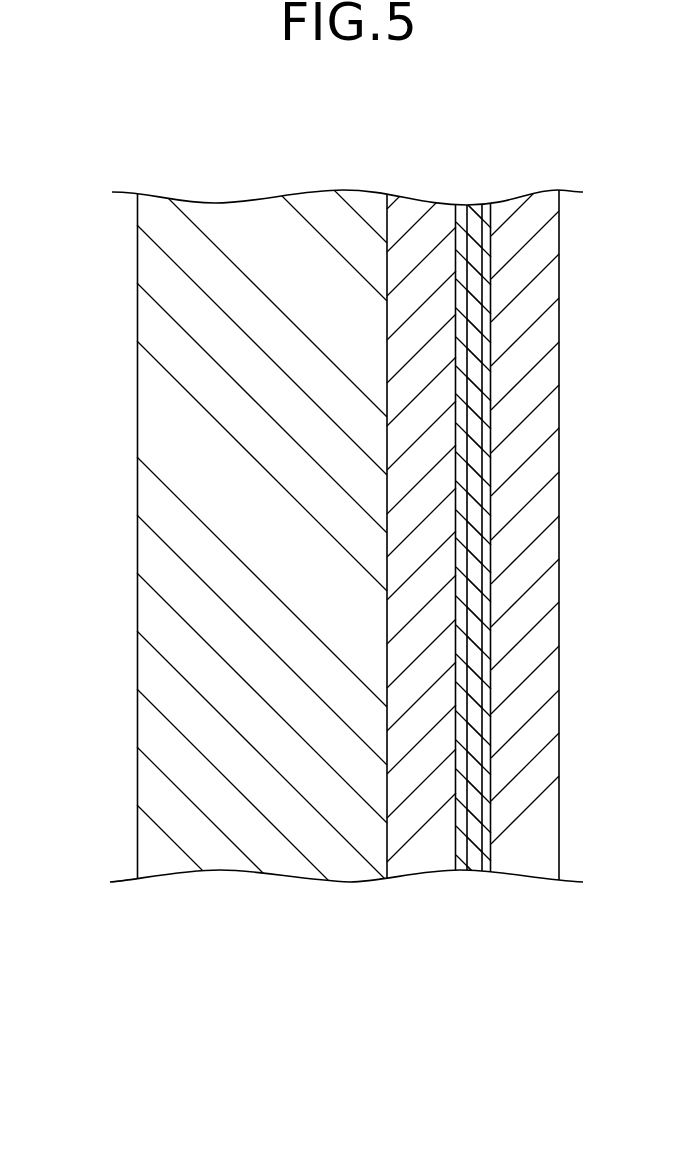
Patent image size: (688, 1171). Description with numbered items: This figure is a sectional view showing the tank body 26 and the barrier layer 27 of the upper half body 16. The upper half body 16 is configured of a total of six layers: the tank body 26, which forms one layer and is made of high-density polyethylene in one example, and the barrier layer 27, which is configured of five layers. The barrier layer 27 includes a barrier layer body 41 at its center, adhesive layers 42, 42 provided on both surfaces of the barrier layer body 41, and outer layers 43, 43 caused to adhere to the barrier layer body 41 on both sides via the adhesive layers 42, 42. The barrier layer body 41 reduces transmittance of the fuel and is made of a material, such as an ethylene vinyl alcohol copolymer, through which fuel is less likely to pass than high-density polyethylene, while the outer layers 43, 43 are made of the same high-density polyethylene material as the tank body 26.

The upper half body 16 is at (121, 300).
The tank body 26 is at (269, 858).
The barrier layer 27 is at (595, 958).
The barrier layer body 41 is at (473, 867).
The adhesive layer 42 is at (460, 867).
The outer layer 43 is at (422, 867).